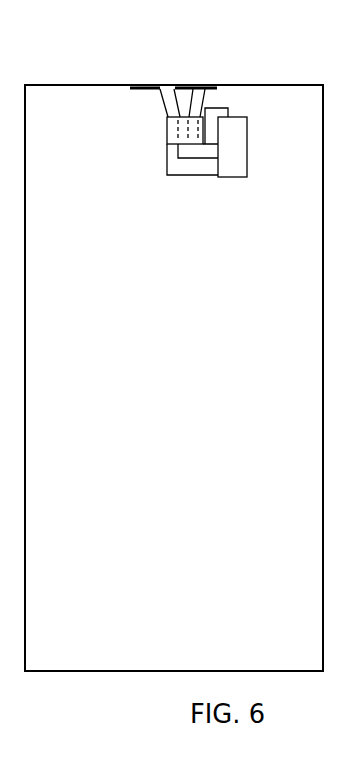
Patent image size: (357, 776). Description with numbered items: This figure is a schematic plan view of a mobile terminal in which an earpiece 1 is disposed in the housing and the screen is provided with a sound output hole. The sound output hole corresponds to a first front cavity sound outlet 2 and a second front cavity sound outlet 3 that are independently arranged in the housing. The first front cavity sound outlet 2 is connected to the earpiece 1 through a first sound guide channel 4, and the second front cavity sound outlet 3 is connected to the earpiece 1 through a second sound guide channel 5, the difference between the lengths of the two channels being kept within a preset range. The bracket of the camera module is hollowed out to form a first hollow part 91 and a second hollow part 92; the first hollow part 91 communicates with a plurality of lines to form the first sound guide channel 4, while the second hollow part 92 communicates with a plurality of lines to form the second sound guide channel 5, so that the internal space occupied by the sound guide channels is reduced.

The earpiece 1 is at (250, 140).
The first front cavity sound outlet 2 is at (150, 86).
The second front cavity sound outlet 3 is at (187, 86).
The first sound guide channel 4 is at (163, 102).
The second sound guide channel 5 is at (200, 112).
The first hollow part 91 is at (172, 128).
The second hollow part 92 is at (200, 137).